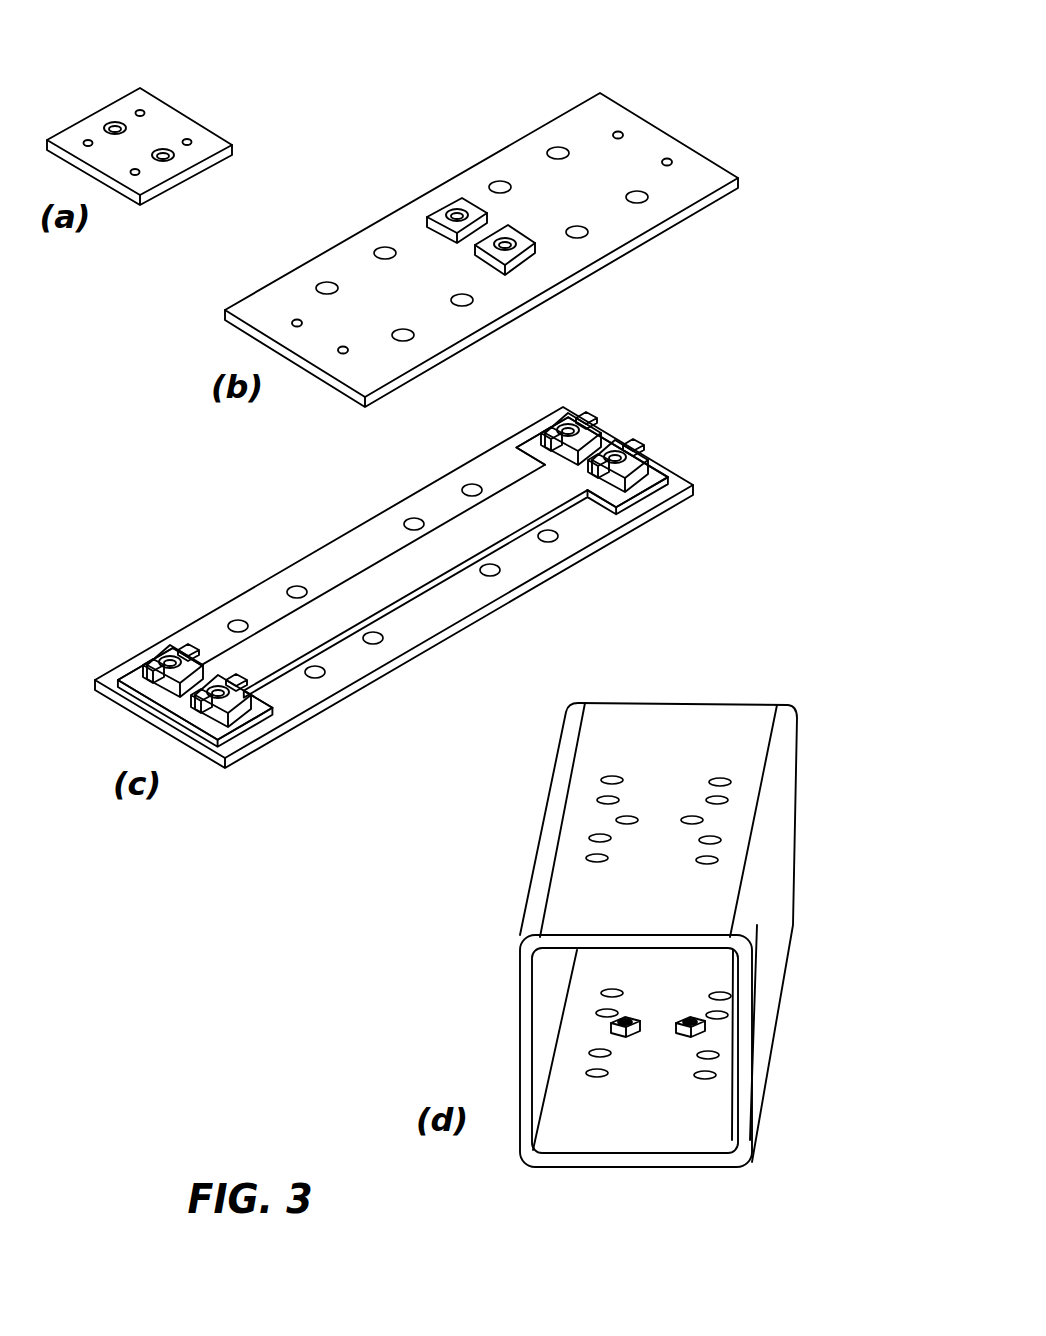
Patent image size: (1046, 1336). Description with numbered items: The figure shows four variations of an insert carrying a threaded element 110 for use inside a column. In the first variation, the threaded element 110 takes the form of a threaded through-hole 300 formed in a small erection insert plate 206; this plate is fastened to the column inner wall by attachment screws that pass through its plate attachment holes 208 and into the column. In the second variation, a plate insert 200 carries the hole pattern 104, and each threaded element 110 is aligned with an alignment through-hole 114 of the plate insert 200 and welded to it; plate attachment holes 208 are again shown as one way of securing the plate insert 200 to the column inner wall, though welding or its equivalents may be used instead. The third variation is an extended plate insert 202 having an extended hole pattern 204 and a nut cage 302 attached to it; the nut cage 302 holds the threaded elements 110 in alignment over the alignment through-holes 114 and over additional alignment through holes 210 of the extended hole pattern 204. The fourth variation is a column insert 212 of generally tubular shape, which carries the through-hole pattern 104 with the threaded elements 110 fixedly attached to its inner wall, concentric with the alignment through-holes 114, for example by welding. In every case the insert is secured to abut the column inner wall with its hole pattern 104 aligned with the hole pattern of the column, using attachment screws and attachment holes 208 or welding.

The hole pattern 104 is at (282, 252).
The threaded element 110 is at (517, 270).
The alignment through-hole 114 is at (550, 256).
The plate insert 200 is at (617, 103).
The extended plate insert 202 is at (688, 482).
The extended hole pattern 204 is at (125, 643).
The erection insert plate 206 is at (212, 130).
The plate attachment hole 208 is at (141, 111).
The additional alignment through hole 210 is at (285, 722).
The column insert 212 is at (646, 703).
The threaded through-hole 300 is at (112, 124).
The nut cage 302 is at (659, 406).